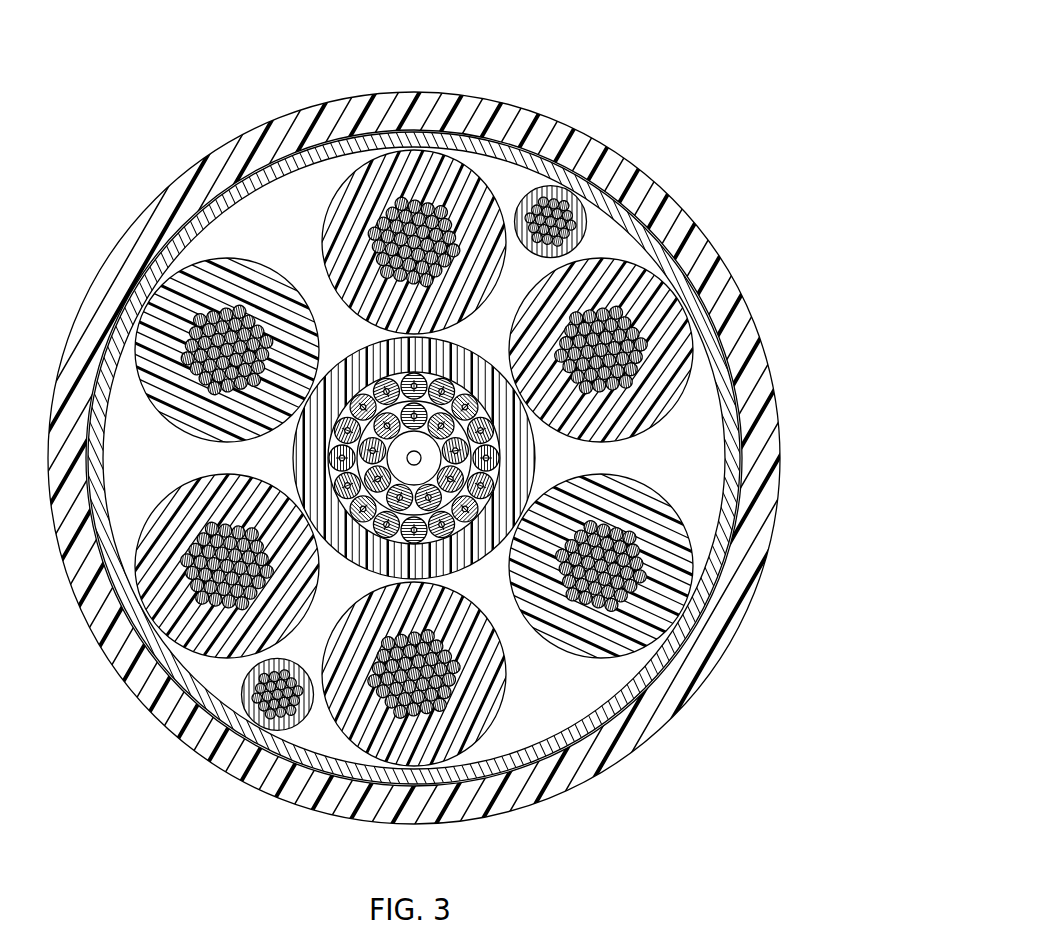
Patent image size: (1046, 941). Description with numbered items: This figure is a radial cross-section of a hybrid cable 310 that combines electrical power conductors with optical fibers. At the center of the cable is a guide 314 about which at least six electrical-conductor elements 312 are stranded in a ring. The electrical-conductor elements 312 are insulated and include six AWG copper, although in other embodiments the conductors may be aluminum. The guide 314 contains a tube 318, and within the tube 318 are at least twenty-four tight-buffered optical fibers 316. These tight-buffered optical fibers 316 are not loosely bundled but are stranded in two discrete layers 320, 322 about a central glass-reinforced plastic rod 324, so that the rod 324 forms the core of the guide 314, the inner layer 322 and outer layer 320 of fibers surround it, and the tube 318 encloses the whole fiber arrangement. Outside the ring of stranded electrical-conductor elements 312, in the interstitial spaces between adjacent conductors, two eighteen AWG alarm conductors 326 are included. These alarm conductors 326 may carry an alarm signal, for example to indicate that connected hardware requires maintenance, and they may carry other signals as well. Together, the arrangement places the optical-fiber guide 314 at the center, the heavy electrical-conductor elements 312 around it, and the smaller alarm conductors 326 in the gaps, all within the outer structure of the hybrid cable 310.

The hybrid cable 310 is at (762, 140).
The electrical-conductor elements 312 is at (474, 745).
The guide 314 is at (553, 457).
The tight-buffered optical fibers 316 is at (345, 432).
The tube 318 is at (466, 551).
The first layer 320 is at (384, 392).
The second layer 322 is at (372, 430).
The central glass-reinforced plastic (GRP) rod 324 is at (411, 466).
The alarm conductors 326 is at (547, 196).